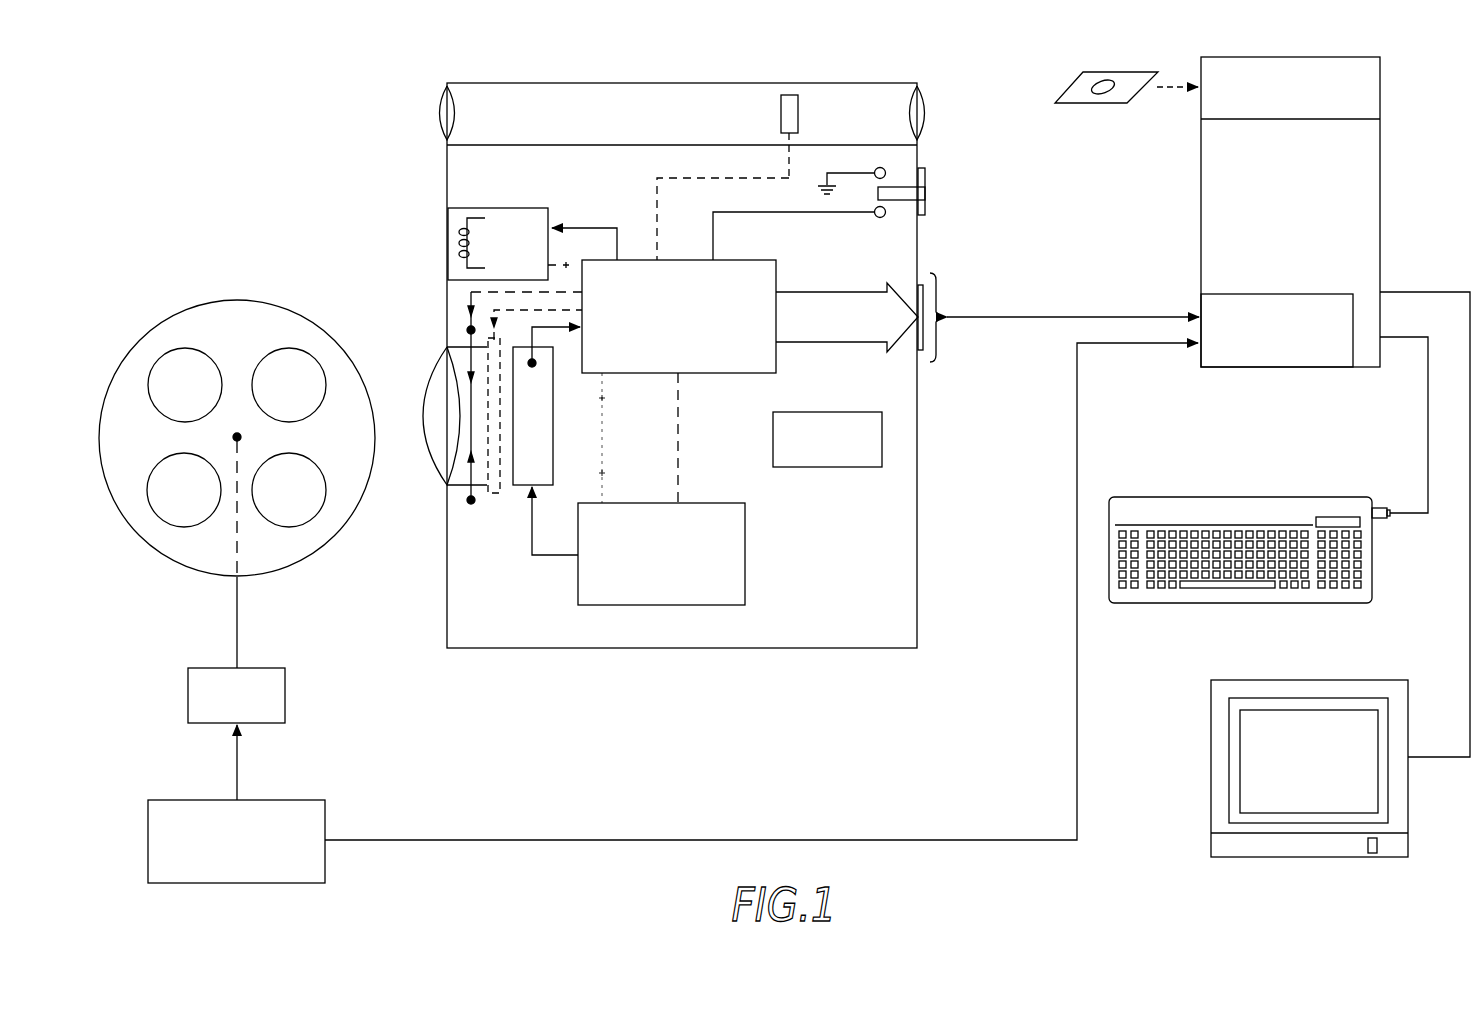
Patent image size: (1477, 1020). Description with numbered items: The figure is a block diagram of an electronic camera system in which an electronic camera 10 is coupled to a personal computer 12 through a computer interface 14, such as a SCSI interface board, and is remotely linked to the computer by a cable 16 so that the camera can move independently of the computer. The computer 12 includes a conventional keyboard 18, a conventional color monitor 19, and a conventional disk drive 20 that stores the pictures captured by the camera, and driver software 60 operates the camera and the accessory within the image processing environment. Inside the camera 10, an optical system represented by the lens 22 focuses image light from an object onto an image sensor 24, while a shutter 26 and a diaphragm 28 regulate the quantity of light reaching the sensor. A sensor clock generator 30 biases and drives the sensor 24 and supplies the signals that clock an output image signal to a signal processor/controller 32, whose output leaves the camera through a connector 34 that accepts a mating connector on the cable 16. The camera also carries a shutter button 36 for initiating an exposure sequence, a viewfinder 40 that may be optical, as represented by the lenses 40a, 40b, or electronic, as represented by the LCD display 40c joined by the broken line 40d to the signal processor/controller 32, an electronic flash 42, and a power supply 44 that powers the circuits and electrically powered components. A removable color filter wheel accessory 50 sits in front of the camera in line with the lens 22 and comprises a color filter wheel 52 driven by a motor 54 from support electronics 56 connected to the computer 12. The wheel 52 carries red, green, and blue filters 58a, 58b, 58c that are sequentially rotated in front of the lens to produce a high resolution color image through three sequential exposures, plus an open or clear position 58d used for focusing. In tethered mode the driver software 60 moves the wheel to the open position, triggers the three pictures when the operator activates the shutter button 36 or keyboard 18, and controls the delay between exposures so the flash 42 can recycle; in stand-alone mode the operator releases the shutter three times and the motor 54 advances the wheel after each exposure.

The electronic camera 10 is at (918, 445).
The personal computer 12 is at (1382, 205).
The computer interface 14 is at (1250, 368).
The cable 16 is at (1022, 320).
The keyboard 18 is at (1287, 603).
The color monitor 19 is at (1211, 735).
The disk drive 20 is at (1382, 87).
The lens 22 is at (430, 470).
The image sensor 24 is at (553, 432).
The shutter 26 is at (495, 495).
The diaphragm 28 is at (467, 477).
The sensor clock generator 30 is at (748, 552).
The signal processor/controller 32 is at (707, 373).
The connector 34 is at (923, 342).
The shutter button 36 is at (927, 192).
The viewfinder 40 is at (567, 83).
The viewfinder lens 40a is at (442, 102).
The viewfinder lens 40b is at (925, 100).
The LCD display 40c is at (800, 110).
The broken line 40d is at (718, 203).
The electronic flash 42 is at (490, 207).
The power supply 44 is at (827, 467).
The color filter wheel accessory 50 is at (237, 427).
The color filter wheel 52 is at (290, 307).
The motor 54 is at (263, 667).
The support electronics 56 is at (273, 798).
The red filter 58a is at (157, 357).
The green filter 58b is at (257, 357).
The blue filter 58c is at (148, 485).
The open position 58d is at (290, 450).
The driver software 60 is at (1073, 82).